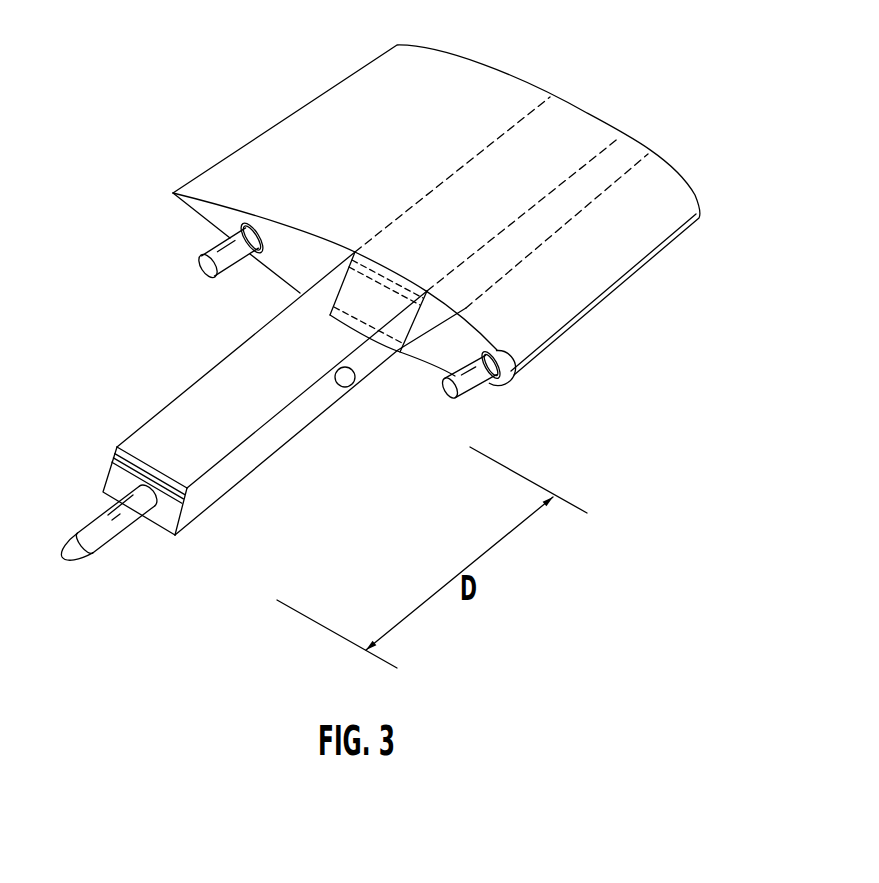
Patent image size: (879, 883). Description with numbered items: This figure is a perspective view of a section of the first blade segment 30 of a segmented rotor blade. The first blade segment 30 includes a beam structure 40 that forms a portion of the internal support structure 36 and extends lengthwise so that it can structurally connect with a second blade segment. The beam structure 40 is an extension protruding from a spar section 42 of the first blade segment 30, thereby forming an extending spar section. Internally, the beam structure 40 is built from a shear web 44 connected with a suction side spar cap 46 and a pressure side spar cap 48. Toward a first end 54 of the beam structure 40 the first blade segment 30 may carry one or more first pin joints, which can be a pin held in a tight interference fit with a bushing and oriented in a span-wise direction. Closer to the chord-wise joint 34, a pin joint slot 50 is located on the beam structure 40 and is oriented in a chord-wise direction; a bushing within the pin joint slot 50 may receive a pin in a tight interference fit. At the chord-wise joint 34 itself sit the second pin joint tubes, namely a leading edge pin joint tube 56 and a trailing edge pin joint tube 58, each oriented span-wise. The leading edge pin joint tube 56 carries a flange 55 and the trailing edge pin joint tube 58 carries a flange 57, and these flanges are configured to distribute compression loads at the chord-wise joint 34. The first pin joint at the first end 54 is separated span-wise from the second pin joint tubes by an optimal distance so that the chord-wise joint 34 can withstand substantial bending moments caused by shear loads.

The first blade segment 30 is at (276, 128).
The chord-wise joint 34 is at (199, 226).
The internal support structure 36 is at (288, 475).
The beam structure 40 is at (147, 432).
The spar section 42 is at (584, 124).
The shear web 44 is at (334, 416).
The suction side spar cap 46 is at (350, 334).
The pressure side spar cap 48 is at (385, 276).
The pin joint slot 50 is at (349, 381).
The first end 54 is at (198, 538).
The flange 55 is at (503, 347).
The leading edge pin joint tube 56 is at (450, 392).
The flange 57 is at (258, 226).
The trailing edge pin joint tube 58 is at (207, 268).